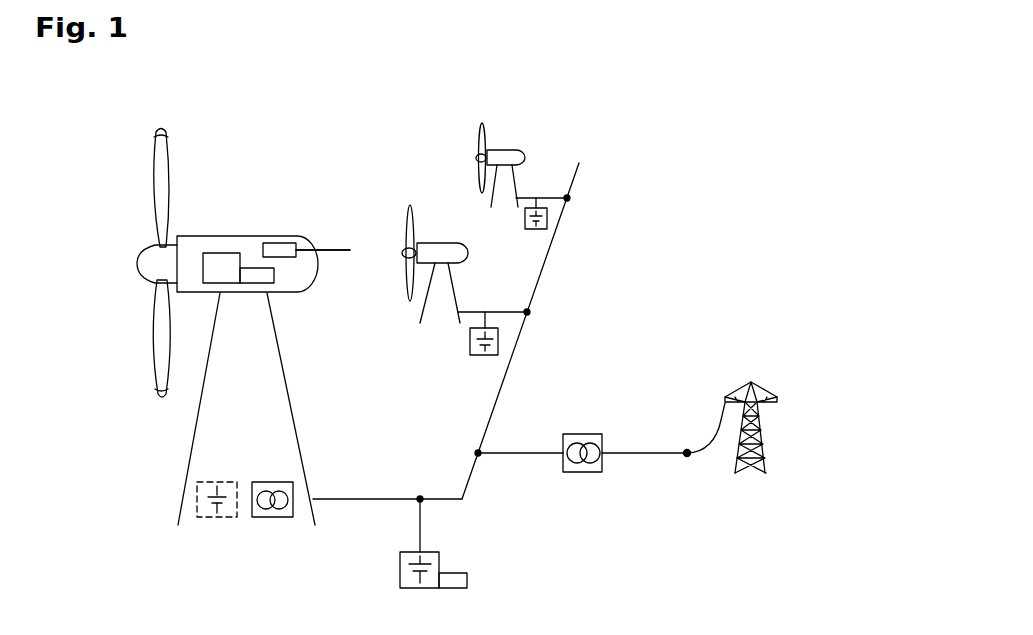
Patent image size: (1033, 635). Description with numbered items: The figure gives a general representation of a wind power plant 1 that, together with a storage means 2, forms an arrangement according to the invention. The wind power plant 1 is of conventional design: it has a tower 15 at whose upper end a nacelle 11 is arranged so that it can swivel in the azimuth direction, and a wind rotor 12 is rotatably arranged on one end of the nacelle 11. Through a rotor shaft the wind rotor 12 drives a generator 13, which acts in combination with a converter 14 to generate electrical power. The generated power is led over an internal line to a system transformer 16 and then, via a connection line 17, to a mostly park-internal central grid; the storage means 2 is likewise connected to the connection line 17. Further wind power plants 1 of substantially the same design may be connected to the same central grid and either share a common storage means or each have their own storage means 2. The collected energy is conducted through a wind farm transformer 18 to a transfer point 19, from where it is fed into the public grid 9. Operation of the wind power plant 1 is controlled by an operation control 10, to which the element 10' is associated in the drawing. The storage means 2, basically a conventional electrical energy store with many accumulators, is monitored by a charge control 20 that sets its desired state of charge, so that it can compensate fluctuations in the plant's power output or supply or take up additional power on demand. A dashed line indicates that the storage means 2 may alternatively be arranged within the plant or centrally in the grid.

The wind power plant 1 is at (272, 136).
The storage means 2 is at (400, 580).
The public grid 9 is at (793, 383).
The operation control 10 is at (279, 207).
The shaft / sensor connection 10' is at (327, 204).
The nacelle 11 is at (195, 244).
The wind rotor 12 is at (147, 258).
The generator 13 is at (218, 262).
The converter 14 is at (271, 276).
The tower 15 is at (192, 441).
The system transformer 16 is at (270, 518).
The connection line 17 is at (443, 495).
The wind farm transformer 18 is at (578, 473).
The transfer point 19 is at (687, 457).
The charge control 20 is at (467, 580).